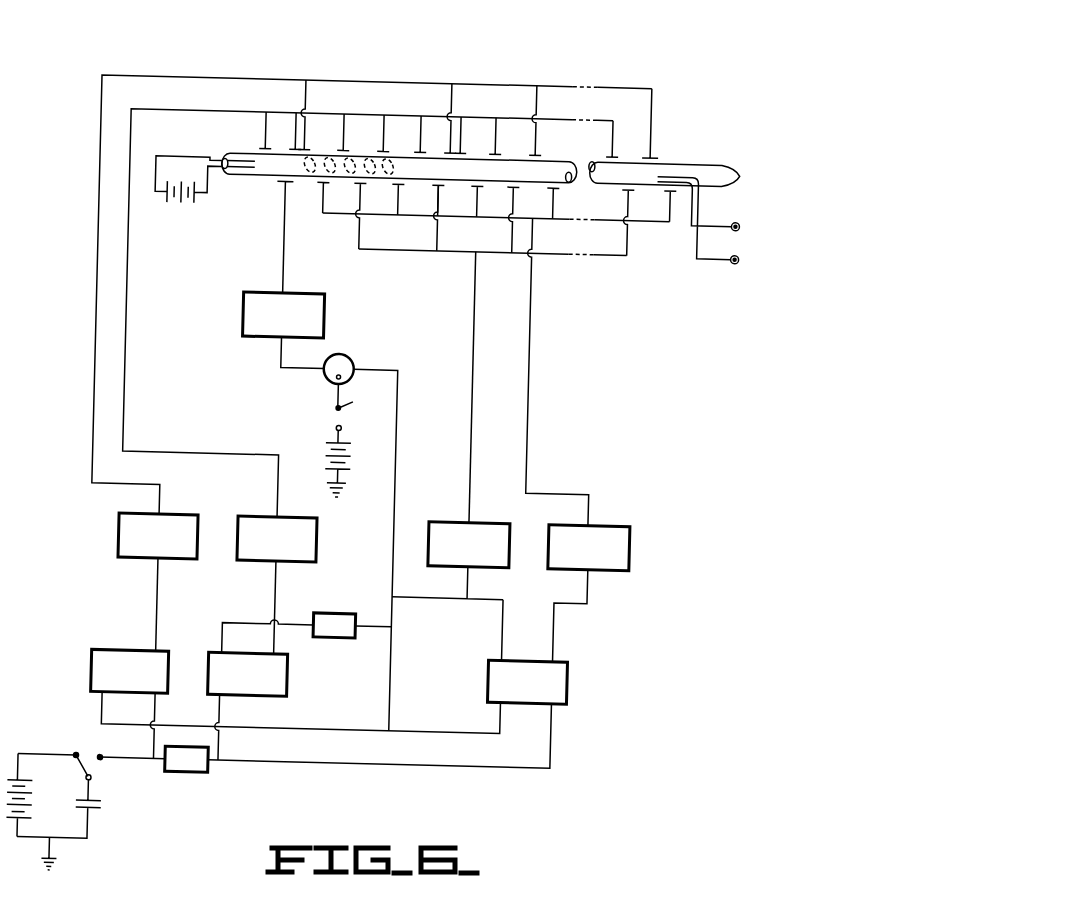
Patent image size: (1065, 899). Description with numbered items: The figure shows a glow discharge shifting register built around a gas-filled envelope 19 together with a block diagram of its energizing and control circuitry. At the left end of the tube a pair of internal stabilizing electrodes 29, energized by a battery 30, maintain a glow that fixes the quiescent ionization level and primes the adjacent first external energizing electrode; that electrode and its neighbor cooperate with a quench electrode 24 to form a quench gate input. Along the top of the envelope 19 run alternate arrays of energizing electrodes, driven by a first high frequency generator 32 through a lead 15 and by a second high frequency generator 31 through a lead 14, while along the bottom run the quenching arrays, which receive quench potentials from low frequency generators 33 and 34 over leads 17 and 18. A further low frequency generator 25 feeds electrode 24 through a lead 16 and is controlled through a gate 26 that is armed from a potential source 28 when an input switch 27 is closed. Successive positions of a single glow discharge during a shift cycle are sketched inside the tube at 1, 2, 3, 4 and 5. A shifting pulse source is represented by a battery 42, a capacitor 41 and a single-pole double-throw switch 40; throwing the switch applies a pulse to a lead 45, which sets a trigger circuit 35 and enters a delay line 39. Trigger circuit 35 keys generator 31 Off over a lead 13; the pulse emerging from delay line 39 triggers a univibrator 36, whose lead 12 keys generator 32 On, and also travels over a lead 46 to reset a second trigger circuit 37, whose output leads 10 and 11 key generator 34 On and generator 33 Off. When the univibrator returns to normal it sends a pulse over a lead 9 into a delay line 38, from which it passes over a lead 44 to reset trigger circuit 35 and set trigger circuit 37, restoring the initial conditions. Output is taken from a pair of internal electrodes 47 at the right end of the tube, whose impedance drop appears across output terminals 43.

The glow discharge position 1 is at (301, 160).
The glow discharge position 2 is at (322, 159).
The glow discharge position 3 is at (343, 176).
The glow discharge position 4 is at (362, 159).
The glow discharge position 5 is at (384, 159).
The lead 9 is at (238, 626).
The output lead 10 is at (559, 626).
The output lead 11 is at (508, 625).
The lead 12 is at (280, 586).
The lead 13 is at (162, 588).
The lead 14 is at (94, 383).
The lead 15 is at (125, 385).
The lead 16 is at (281, 263).
The lead 17 is at (473, 304).
The lead 18 is at (528, 304).
The envelope 19 is at (586, 158).
The quench electrode 24 is at (272, 187).
The low frequency generator 25 is at (241, 320).
The gate 26 is at (349, 359).
The input switch 27 is at (350, 412).
The potential source 28 is at (352, 462).
The stabilizing electrodes 29 is at (212, 171).
The battery 30 is at (178, 212).
The second high frequency generator 31 is at (130, 520).
The first high frequency generator 32 is at (255, 520).
The low frequency generator 33 is at (495, 521).
The low frequency generator 34 is at (625, 521).
The trigger circuit 35 is at (98, 672).
The univibrator 36 is at (294, 676).
The trigger circuit 37 is at (574, 680).
The delay line 38 is at (340, 615).
The delay line 39 is at (205, 777).
The single-pole double-throw switch 40 is at (102, 776).
The capacitor 41 is at (110, 814).
The battery 42 is at (34, 813).
The output terminals 43 is at (735, 221).
The lead 44 is at (356, 733).
The lead 45 is at (133, 762).
The lead 46 is at (350, 765).
The internal electrodes 47 is at (696, 200).